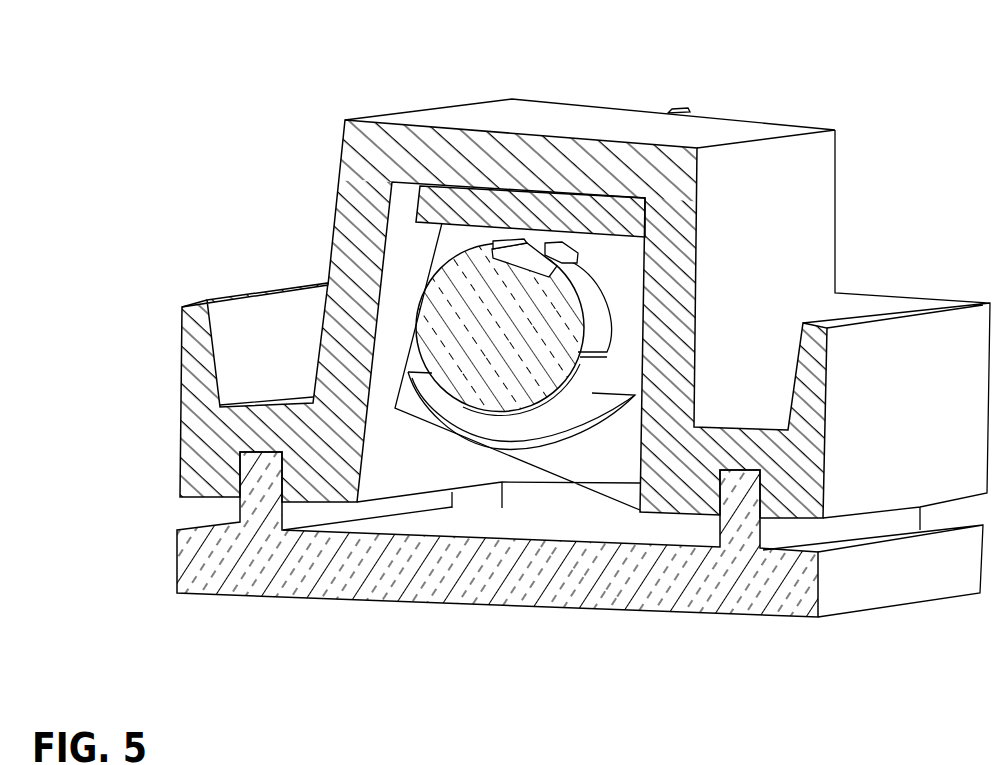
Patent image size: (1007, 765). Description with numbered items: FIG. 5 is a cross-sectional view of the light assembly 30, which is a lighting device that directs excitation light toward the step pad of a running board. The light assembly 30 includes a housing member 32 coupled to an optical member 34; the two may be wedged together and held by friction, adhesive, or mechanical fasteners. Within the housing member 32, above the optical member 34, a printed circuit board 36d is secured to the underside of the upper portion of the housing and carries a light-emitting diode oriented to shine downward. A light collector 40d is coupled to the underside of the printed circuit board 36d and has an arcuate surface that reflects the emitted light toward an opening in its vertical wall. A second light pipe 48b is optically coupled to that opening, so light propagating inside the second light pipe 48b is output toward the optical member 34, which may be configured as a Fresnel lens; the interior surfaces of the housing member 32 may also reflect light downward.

The light assembly 30 is at (806, 96).
The housing member 32 is at (722, 135).
The optical member 34 is at (867, 585).
The printed circuit board 36d is at (503, 217).
The light collector 40d is at (412, 408).
The second light pipe 48b is at (488, 393).